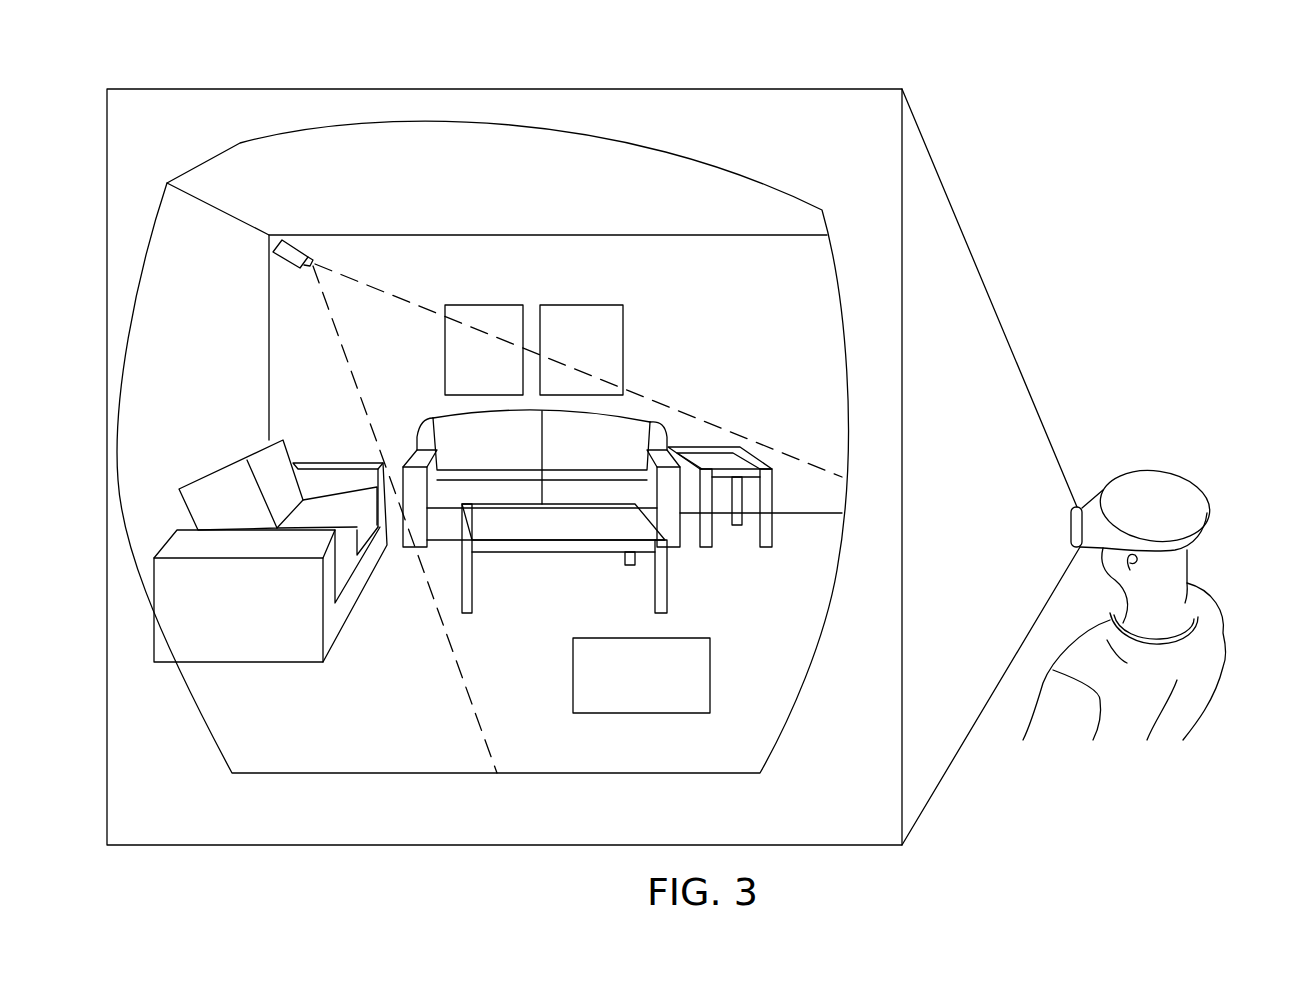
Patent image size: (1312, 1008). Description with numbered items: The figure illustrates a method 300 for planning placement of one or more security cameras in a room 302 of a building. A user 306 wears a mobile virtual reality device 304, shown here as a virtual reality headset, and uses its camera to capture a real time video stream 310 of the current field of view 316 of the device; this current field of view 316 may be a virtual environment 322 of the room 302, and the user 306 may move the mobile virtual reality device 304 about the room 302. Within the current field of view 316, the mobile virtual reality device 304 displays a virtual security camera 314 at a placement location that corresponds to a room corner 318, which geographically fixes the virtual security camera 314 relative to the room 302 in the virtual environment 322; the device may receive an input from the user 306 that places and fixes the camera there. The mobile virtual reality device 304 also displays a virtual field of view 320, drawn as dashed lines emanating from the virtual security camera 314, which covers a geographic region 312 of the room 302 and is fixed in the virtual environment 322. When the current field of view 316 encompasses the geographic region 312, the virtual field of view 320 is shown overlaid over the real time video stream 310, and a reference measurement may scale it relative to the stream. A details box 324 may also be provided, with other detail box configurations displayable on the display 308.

The method 300 is at (680, 80).
The room 302 is at (892, 80).
The mobile virtual reality device 304 is at (1100, 505).
The user 306 is at (1197, 472).
The display 308 is at (545, 145).
The real time video stream 310 is at (770, 173).
The geographic region 312 is at (700, 413).
The virtual security camera 314 is at (291, 258).
The current field of view 316 is at (437, 143).
The room corner 318 is at (327, 175).
The virtual field of view 320 is at (343, 288).
The virtual environment 322 is at (698, 183).
The details box 324 is at (685, 700).